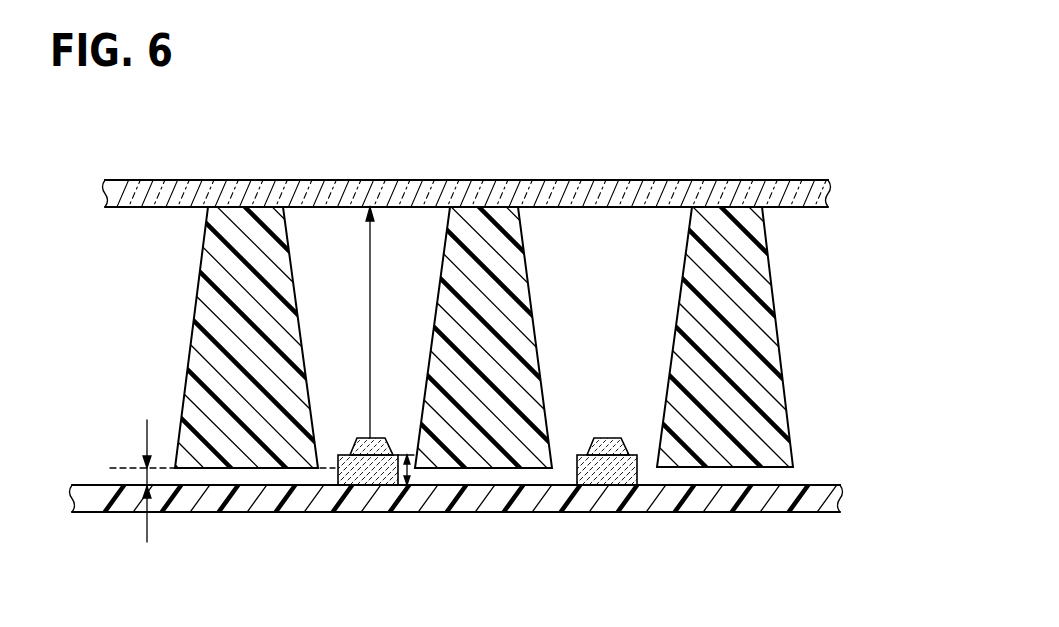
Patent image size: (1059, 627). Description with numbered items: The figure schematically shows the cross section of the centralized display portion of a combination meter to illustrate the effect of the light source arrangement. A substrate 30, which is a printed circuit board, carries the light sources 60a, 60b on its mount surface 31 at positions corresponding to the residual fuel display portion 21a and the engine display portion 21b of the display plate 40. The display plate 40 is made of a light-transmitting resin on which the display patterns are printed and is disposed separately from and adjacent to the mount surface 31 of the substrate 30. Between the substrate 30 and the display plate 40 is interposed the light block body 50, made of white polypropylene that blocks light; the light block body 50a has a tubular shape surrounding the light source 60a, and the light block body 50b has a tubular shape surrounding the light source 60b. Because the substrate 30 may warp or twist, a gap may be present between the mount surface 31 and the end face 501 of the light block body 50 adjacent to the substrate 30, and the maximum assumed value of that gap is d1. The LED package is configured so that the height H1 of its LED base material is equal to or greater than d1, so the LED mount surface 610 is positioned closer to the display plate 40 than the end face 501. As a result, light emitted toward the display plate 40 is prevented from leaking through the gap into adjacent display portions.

The residual fuel display portion 21a is at (368, 172).
The engine display portion 21b is at (613, 172).
The display plate 40 is at (818, 190).
The light block body 50 is at (484, 324).
The light block body 50a is at (318, 272).
The light block body 50b is at (725, 327).
The end face 501 is at (178, 470).
The LED mount surface 610 is at (340, 454).
The light source 60a is at (380, 438).
The light source 60b is at (607, 438).
The substrate 30 is at (778, 513).
The mount surface 31 is at (828, 484).
The maximum value of the gap d1 is at (142, 480).
The height of the LED base material H1 is at (410, 474).